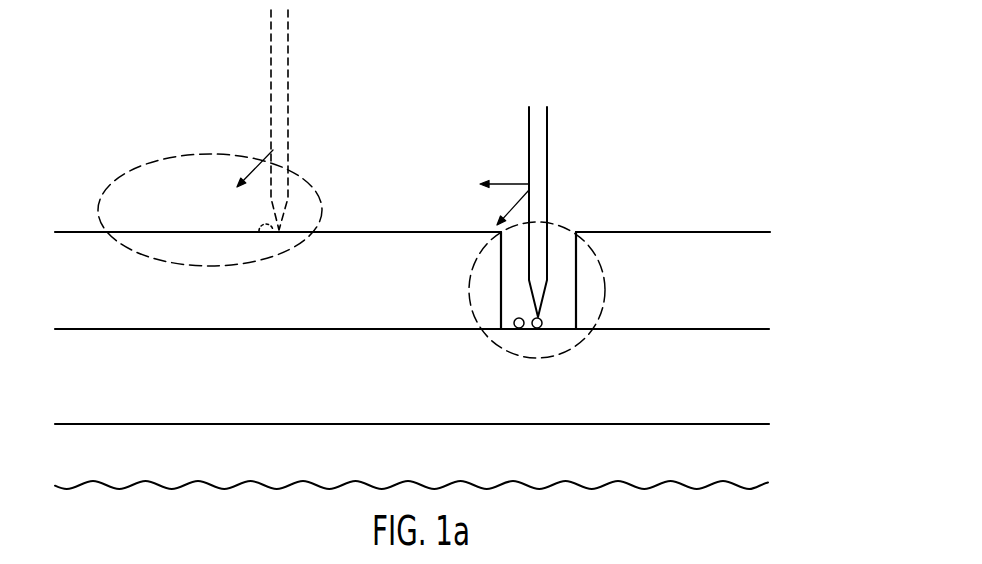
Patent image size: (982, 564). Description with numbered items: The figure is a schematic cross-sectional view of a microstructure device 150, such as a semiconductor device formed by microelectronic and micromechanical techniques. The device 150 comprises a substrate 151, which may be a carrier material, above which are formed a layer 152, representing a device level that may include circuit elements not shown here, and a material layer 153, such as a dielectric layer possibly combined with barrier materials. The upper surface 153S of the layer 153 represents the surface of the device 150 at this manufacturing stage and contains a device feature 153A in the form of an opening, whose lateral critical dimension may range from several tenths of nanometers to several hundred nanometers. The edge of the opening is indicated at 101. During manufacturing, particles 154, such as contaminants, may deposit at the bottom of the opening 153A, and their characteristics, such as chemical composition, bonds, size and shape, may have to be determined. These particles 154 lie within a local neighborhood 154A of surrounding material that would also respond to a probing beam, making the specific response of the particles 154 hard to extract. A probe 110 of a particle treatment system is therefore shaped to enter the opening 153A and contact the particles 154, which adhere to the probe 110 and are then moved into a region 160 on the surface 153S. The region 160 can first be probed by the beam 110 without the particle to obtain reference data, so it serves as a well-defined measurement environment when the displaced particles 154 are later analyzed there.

The microstructure device 150 is at (824, 66).
The probe 110 is at (547, 124).
The edge of opening 101 is at (590, 225).
The material layer 153 is at (796, 255).
The device feature 153A is at (558, 248).
The surface 153S is at (731, 230).
The layer 152 is at (797, 351).
The substrate 151 is at (758, 463).
The particles 154 is at (543, 336).
The local neighborhood 154A is at (583, 344).
The region 160 is at (220, 168).